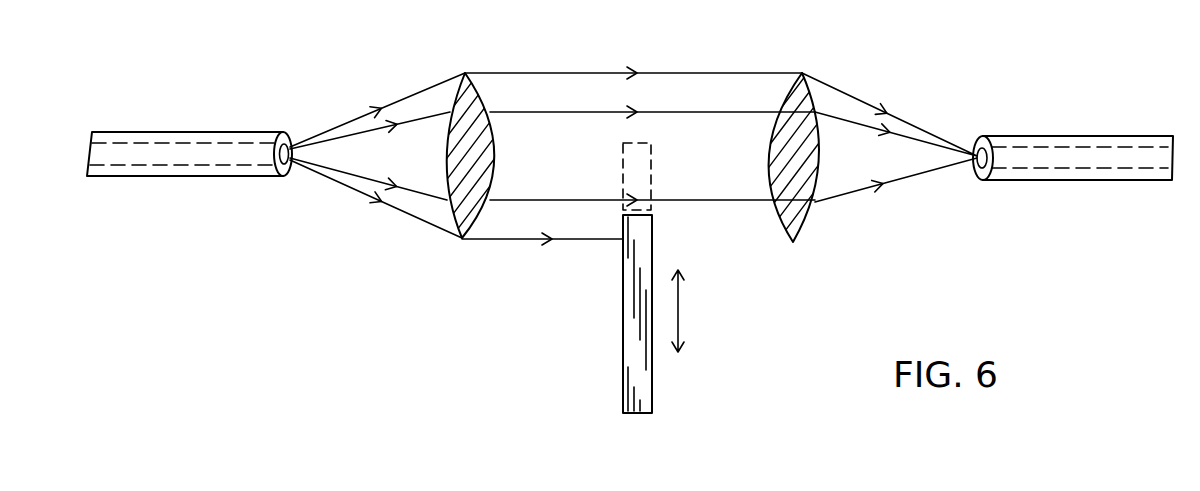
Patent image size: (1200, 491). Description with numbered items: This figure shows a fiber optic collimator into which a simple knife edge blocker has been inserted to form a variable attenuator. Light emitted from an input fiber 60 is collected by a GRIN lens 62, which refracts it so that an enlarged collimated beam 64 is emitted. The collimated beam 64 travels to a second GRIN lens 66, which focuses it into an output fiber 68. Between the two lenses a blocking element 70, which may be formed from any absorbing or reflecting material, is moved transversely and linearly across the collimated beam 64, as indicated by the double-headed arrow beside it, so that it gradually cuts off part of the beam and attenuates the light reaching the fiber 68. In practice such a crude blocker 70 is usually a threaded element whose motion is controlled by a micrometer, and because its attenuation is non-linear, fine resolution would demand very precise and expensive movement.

The fiber 60 is at (272, 150).
The GRIN lens 62 is at (462, 240).
The collimated beam 64 is at (718, 73).
The GRIN lens 66 is at (793, 244).
The fiber 68 is at (957, 150).
The blocking element 70 is at (610, 319).